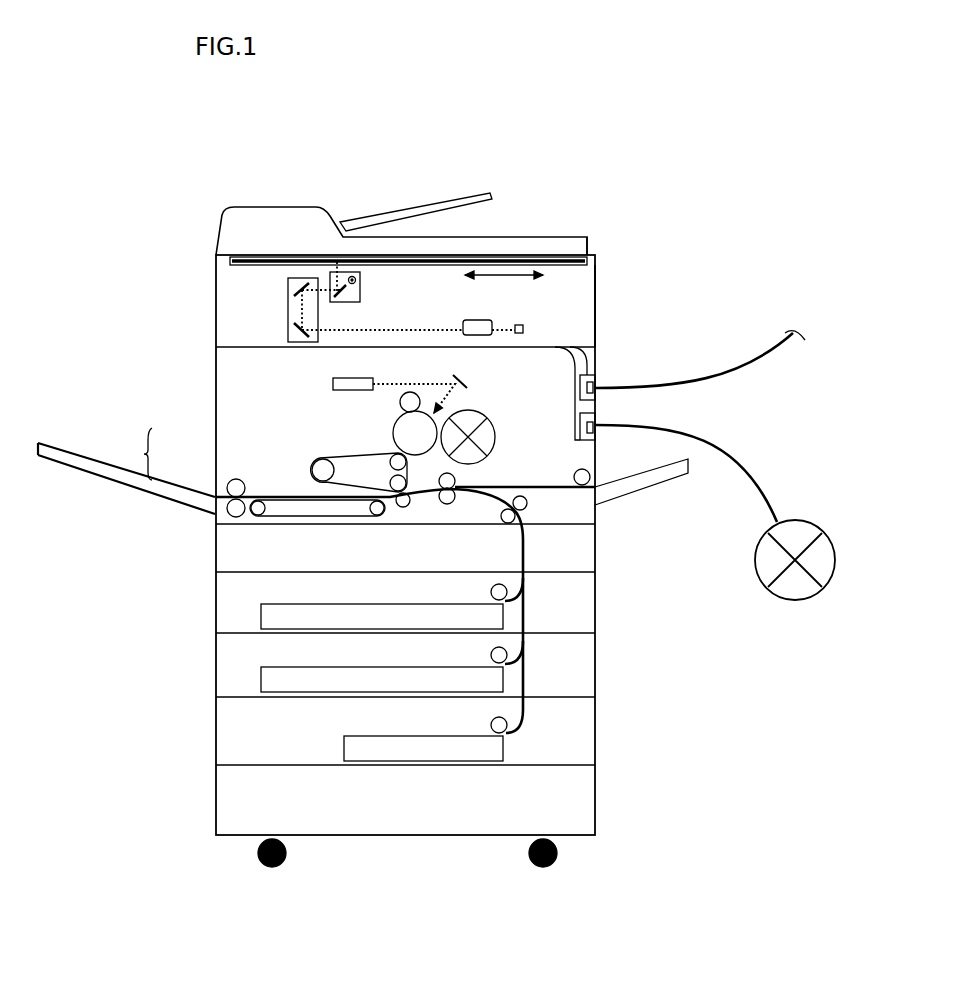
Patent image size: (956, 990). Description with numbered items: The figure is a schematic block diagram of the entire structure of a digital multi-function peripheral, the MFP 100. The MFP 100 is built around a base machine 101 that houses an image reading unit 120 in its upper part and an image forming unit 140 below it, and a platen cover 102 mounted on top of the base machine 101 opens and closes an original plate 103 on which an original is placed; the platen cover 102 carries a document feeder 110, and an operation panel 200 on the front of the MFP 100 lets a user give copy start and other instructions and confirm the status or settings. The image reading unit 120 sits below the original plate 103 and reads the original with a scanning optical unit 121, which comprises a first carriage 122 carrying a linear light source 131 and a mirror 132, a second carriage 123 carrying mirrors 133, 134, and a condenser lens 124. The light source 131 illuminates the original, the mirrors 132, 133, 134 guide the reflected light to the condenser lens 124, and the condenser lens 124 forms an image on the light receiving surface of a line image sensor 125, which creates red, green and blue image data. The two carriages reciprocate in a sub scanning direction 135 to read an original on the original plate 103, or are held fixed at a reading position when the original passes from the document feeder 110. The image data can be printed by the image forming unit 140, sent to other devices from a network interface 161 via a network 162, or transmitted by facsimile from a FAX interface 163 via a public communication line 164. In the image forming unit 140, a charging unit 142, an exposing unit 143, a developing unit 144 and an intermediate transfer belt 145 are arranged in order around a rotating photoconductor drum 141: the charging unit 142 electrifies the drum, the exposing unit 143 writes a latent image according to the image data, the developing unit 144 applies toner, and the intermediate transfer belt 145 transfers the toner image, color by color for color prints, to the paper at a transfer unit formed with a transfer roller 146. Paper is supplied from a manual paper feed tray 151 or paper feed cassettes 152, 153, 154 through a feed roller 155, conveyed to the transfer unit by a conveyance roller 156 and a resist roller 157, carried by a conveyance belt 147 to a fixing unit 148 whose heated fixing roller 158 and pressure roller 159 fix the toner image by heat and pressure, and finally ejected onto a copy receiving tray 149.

The MFP 100 is at (594, 146).
The base machine 101 is at (197, 360).
The platen cover 102 is at (196, 217).
The original plate 103 is at (510, 257).
The document feeder 110 is at (273, 207).
The image reading unit 120 is at (596, 315).
The scanning optical unit 121 is at (585, 291).
The first carriage 122 is at (343, 302).
The second carriage 123 is at (288, 303).
The condenser lens 124 is at (490, 320).
The line image sensor 125 is at (523, 328).
The linear light source 131 is at (360, 278).
The mirror 132 is at (358, 300).
The mirror 133 is at (290, 285).
The mirror 134 is at (290, 337).
The sub scanning direction 135 is at (504, 284).
The image forming unit 140 is at (596, 352).
The photoconductor drum 141 is at (393, 433).
The charging unit 142 is at (400, 402).
The exposing unit 143 is at (333, 384).
The developing unit 144 is at (497, 425).
The intermediate transfer belt 145 is at (330, 460).
The transfer roller 146 is at (406, 507).
The conveyance belt 147 is at (270, 496).
The fixing unit 148 is at (130, 453).
The copy receiving tray 149 is at (60, 450).
The manual paper feed tray 151 is at (634, 485).
The paper feed cassette 152 is at (262, 613).
The paper feed cassette 153 is at (262, 678).
The paper feed cassette 154 is at (343, 748).
The feed roller 155 is at (590, 474).
The conveyance roller 156 is at (527, 504).
The resist roller 157 is at (450, 504).
The fixing roller 158 is at (229, 481).
The pressure roller 159 is at (228, 503).
The network interface 161 is at (596, 420).
The network 162 is at (812, 530).
The FAX interface 163 is at (596, 382).
The public communication line 164 is at (748, 373).
The operation panel 200 is at (590, 240).